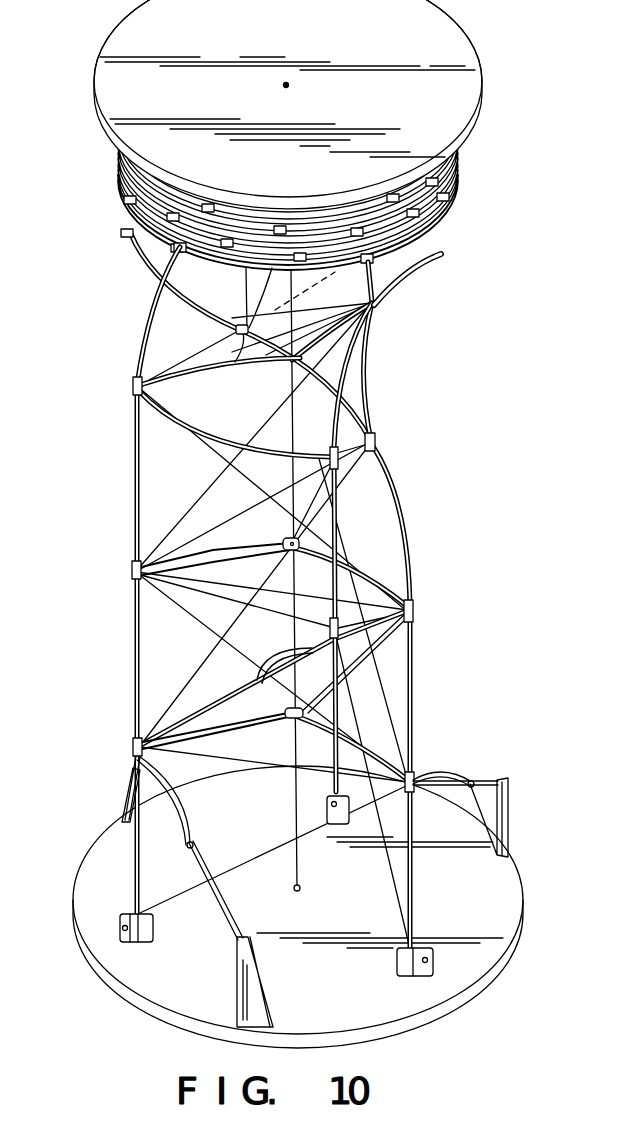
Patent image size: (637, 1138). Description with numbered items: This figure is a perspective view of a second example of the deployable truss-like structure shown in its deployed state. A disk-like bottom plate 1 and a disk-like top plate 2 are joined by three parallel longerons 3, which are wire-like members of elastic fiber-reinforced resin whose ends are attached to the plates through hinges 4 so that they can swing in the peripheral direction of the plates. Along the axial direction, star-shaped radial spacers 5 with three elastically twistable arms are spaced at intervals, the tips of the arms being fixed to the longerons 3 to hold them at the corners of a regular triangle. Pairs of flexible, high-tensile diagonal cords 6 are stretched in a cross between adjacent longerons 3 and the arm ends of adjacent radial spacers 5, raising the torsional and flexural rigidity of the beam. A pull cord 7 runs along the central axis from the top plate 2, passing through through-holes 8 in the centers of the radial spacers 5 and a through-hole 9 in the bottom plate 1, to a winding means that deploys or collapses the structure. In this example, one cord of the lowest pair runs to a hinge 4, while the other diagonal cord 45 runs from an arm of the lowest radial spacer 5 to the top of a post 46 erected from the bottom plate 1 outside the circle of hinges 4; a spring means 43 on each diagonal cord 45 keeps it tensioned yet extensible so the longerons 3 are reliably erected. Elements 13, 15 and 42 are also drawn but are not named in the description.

The bottom plate 1 is at (512, 937).
The top plate 2 is at (483, 88).
The longerons 3 is at (445, 186).
The hinges 4 is at (118, 928).
The radial spacers 5 is at (142, 256).
The diagonal cords 6 is at (345, 357).
The pull cord 7 is at (297, 580).
The through-holes 8 is at (283, 556).
The through-hole 9 is at (301, 892).
The bracket 13 is at (275, 653).
The lower strut tube 15 is at (217, 727).
The bow spring 42 is at (438, 772).
The spring means 43 is at (479, 773).
The diagonal cord 45 is at (133, 768).
The posts 46 is at (127, 804).